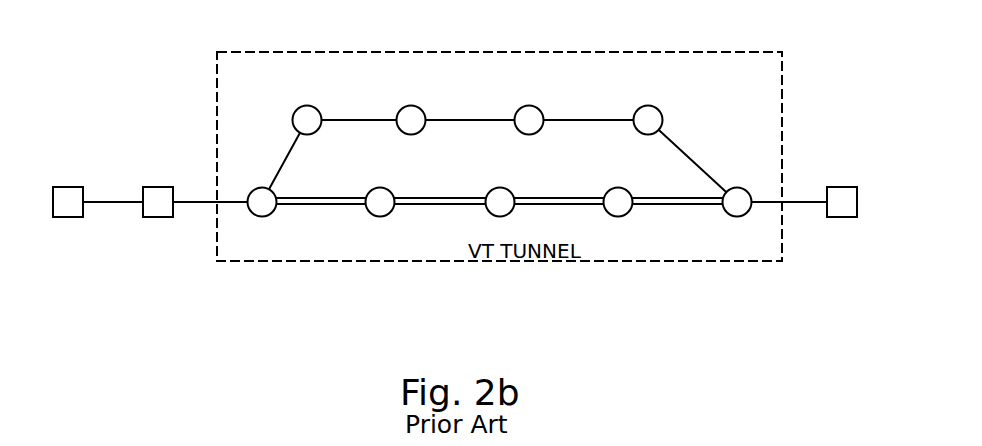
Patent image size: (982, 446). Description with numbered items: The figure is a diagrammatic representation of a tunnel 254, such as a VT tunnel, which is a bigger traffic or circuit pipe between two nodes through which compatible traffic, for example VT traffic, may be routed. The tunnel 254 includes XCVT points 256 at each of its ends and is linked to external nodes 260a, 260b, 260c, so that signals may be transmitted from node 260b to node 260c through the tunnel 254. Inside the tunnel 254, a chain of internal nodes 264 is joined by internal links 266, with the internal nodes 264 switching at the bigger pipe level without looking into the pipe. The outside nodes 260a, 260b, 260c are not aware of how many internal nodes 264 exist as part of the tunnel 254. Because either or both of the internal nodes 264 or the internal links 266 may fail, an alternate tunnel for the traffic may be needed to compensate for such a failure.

The tunnel 254 is at (215, 72).
The XCVT points 256 is at (263, 218).
The node 260a is at (68, 183).
The node 260b is at (150, 217).
The node 260c is at (835, 217).
The internal nodes 264 is at (387, 185).
The internal links 266 is at (325, 204).